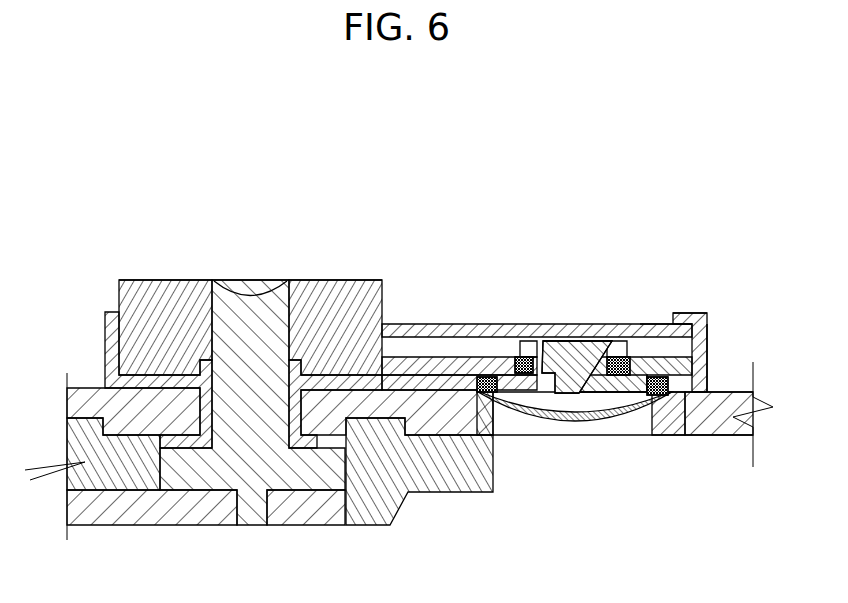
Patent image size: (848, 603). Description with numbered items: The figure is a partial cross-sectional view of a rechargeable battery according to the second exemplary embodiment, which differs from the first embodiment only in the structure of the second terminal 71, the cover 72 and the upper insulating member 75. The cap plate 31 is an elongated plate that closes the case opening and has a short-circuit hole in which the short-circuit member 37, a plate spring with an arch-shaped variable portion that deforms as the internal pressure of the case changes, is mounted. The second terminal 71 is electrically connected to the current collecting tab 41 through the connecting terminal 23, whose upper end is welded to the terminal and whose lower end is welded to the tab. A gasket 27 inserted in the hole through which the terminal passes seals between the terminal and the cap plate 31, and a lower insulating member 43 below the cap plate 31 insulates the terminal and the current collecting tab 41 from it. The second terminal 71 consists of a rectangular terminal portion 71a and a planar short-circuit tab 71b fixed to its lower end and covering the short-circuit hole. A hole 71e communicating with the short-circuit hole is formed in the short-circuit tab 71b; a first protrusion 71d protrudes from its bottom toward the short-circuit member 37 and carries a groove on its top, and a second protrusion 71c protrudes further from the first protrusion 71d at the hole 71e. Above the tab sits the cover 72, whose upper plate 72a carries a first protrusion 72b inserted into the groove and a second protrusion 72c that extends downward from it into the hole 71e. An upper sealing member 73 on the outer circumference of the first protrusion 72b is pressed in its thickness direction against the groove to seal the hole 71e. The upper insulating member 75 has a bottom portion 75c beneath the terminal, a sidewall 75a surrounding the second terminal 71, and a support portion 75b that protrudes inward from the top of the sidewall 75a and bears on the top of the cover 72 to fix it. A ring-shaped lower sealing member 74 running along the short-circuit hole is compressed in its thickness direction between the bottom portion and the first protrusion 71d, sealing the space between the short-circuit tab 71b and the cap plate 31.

The connecting terminal 23 is at (248, 295).
The gasket 27 is at (202, 410).
The cap plate 31 is at (92, 402).
The short-circuit member 37 is at (547, 421).
The current collecting tab 41 is at (148, 527).
The lower insulating member 43 is at (90, 452).
The second terminal 71 is at (405, 359).
The terminal portion 71a is at (318, 300).
The short-circuit tab 71b is at (463, 324).
The second protrusion 71c is at (633, 397).
The first protrusion 71d is at (508, 395).
The hole 71e is at (588, 405).
The cover 72 is at (611, 299).
The upper plate 72a is at (655, 324).
The first protrusion 72b is at (618, 357).
The second protrusion 72c is at (555, 343).
The upper sealing member 73 is at (526, 357).
The lower sealing member 74 is at (480, 393).
The upper insulating member 75 is at (718, 368).
The sidewall 75a is at (707, 345).
The support portion 75b is at (695, 313).
The seal of stopper 75c is at (680, 393).